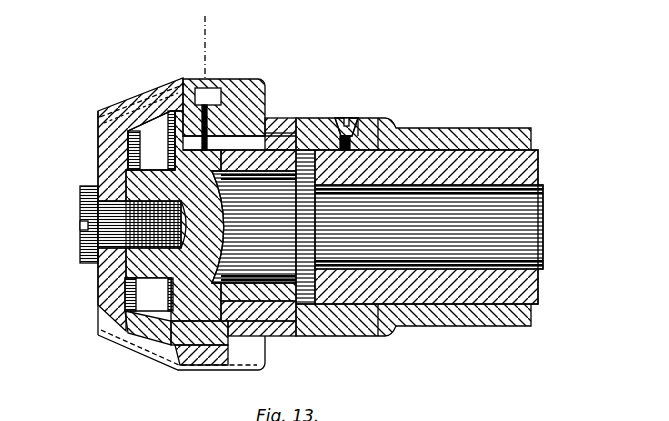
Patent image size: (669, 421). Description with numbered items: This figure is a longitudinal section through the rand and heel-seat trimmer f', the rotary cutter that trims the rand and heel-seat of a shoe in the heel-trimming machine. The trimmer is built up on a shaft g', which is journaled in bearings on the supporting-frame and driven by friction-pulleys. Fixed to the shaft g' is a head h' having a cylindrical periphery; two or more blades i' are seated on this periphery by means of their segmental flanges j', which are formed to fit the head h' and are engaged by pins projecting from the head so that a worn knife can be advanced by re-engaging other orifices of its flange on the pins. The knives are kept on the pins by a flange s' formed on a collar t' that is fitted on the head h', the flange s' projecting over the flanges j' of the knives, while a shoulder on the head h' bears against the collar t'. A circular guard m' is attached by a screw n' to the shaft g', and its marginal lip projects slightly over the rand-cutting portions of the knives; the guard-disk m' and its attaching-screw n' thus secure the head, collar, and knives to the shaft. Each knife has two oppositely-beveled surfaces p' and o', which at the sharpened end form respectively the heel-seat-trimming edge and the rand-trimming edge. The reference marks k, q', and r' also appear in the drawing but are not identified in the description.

The rand and heel-seat trimmer f' is at (115, 206).
The beveled surface o' is at (143, 118).
The beveled surface p' is at (201, 84).
The blade i' is at (142, 75).
The screw k is at (200, 100).
The flange s' is at (181, 225).
The segmental flange j' is at (239, 188).
The head h' is at (406, 210).
The collar t' is at (349, 204).
The set screw q' is at (350, 113).
The screw head r' is at (370, 114).
The screw n' is at (301, 224).
The shaft g' is at (393, 227).
The circular guard m' is at (176, 228).